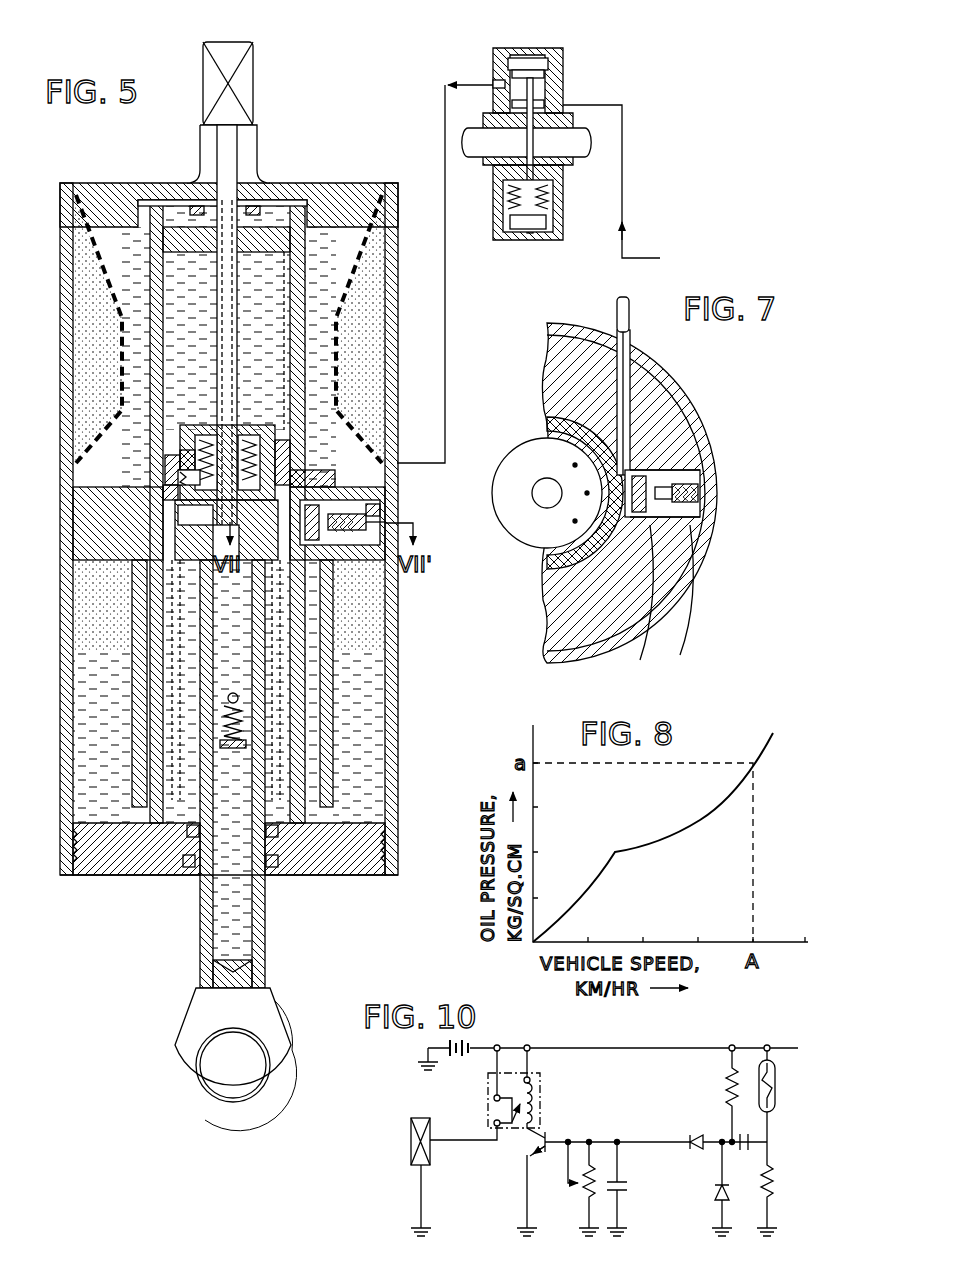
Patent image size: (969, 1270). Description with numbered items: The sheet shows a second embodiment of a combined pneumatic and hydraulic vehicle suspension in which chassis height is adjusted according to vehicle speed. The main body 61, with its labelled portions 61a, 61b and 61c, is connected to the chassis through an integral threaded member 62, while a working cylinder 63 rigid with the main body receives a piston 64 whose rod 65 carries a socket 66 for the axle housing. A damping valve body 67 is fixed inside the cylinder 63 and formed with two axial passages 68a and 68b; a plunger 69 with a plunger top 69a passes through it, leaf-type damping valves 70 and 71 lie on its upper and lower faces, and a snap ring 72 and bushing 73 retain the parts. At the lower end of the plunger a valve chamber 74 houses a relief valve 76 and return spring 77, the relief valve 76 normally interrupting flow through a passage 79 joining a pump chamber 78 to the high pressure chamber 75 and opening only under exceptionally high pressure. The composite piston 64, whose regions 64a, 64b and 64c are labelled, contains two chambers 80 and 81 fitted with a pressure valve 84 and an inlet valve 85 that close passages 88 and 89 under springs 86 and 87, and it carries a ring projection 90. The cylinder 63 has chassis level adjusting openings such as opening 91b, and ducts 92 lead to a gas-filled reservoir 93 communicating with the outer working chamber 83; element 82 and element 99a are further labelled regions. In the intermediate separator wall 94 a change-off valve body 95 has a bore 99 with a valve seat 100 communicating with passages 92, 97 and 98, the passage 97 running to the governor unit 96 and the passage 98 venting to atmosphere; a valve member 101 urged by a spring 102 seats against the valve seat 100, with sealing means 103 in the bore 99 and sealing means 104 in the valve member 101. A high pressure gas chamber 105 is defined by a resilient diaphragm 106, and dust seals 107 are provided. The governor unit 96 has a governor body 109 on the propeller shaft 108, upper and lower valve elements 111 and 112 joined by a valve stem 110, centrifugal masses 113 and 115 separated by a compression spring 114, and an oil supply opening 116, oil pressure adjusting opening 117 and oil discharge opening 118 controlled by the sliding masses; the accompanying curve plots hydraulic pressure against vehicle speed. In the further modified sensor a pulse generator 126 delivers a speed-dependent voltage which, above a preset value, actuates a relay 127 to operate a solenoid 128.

In FIG. 5, the main body 61 is at (63, 296).
In FIG. 5, the outer tube wall 61a is at (390, 642).
In FIG. 5, the top cap 61b is at (360, 200).
In FIG. 5, the bottom cap 61c is at (355, 860).
In FIG. 5, the threaded member 62 is at (240, 135).
In FIG. 5, the working cylinder 63 is at (160, 330).
In FIG. 5, the composite piston 64 is at (200, 425).
In FIG. 5, the valve body right portion 64a is at (282, 470).
In FIG. 5, the valve body left flange 64b is at (165, 488).
In FIG. 5, the valve body left portion 64c is at (190, 467).
In FIG. 5, the rod 65 is at (262, 935).
In FIG. 5, the mounting eye 66 is at (185, 1050).
In FIG. 5, the damping valve body 67 is at (267, 341).
In FIG. 5, the passage 68a is at (163, 240).
In FIG. 5, the passage 68b is at (290, 240).
In FIG. 5, the plunger 69 is at (240, 335).
In FIG. 5, the plunger top 69a is at (246, 222).
In FIG. 5, the damping valve 70 is at (178, 215).
In FIG. 5, the damping valve 71 is at (175, 262).
In FIG. 5, the snap ring 72 is at (190, 341).
In FIG. 5, the bushing 73 is at (262, 230).
In FIG. 5, the valve chamber 74 is at (242, 722).
In FIG. 5, the high pressure chamber 75 is at (95, 372).
In FIG. 5, the relief valve 76 is at (240, 698).
In FIG. 5, the return spring 77 is at (244, 745).
In FIG. 5, the pump chamber 78 is at (230, 930).
In FIG. 5, the passage 79 is at (237, 362).
In FIG. 5, the chamber 80 is at (250, 437).
In FIG. 5, the chamber 81 is at (170, 507).
In FIG. 5, the bladder 82 is at (120, 340).
In FIG. 5, the outer working chamber 83 is at (175, 665).
In FIG. 5, the pressure valve 84 is at (185, 455).
In FIG. 5, the inlet valve 85 is at (180, 679).
In FIG. 5, the spring 86 is at (207, 430).
In FIG. 5, the spring 87 is at (185, 512).
In FIG. 5, the passage 88 is at (195, 482).
In FIG. 5, the passage 89 is at (275, 679).
In FIG. 5, the ring projection 90 is at (300, 478).
In FIG. 5, the chassis level adjusting opening 91b is at (318, 668).
In FIG. 5, the passage 92 is at (318, 722).
In FIG. 5, the reservoir 93 is at (90, 770).
In FIG. 5, the intermediate separator wall 94 is at (100, 590).
In FIG. 7, the intermediate separator wall 94 is at (635, 605).
In FIG. 7, the change-off valve body 95 is at (622, 540).
In FIG. 5, the governor unit 96 is at (549, 144).
In FIG. 5, the passage 97 is at (445, 120).
In FIG. 7, the passage 97 is at (625, 400).
In FIG. 5, the passage 98 is at (345, 522).
In FIG. 7, the passage 98 is at (700, 497).
In FIG. 5, the bore 99 is at (312, 520).
In FIG. 7, the bore 99 is at (640, 488).
In FIG. 5, the gas chamber 99a is at (320, 565).
In FIG. 7, the valve seat 100 is at (665, 475).
In FIG. 7, the valve member 101 is at (652, 527).
In FIG. 5, the spring 102 is at (372, 508).
In FIG. 7, the spring 102 is at (700, 480).
In FIG. 5, the sealing means 103 is at (360, 552).
In FIG. 7, the sealing means 103 is at (660, 517).
In FIG. 7, the sealing means 104 is at (690, 570).
In FIG. 5, the high pressure gas chamber 105 is at (360, 320).
In FIG. 5, the resilient diaphragm 106 is at (342, 302).
In FIG. 5, the dust seal 107 is at (190, 840).
In FIG. 5, the propeller shaft 108 is at (578, 140).
In FIG. 5, the governor body 109 is at (555, 58).
In FIG. 5, the valve stem 110 is at (520, 160).
In FIG. 5, the upper valve element 111 is at (528, 70).
In FIG. 5, the lower valve element 112 is at (515, 122).
In FIG. 5, the centrifugal mass 113 is at (525, 230).
In FIG. 5, the compression spring 114 is at (550, 200).
In FIG. 5, the centrifugal mass 115 is at (555, 175).
In FIG. 5, the oil supply opening 116 is at (568, 105).
In FIG. 5, the oil pressure adjusting opening 117 is at (495, 82).
In FIG. 5, the oil discharge opening 118 is at (508, 62).
In FIG. 10, the pulse generator 126 is at (775, 1080).
In FIG. 10, the relay 127 is at (540, 1098).
In FIG. 10, the solenoid 128 is at (430, 1142).